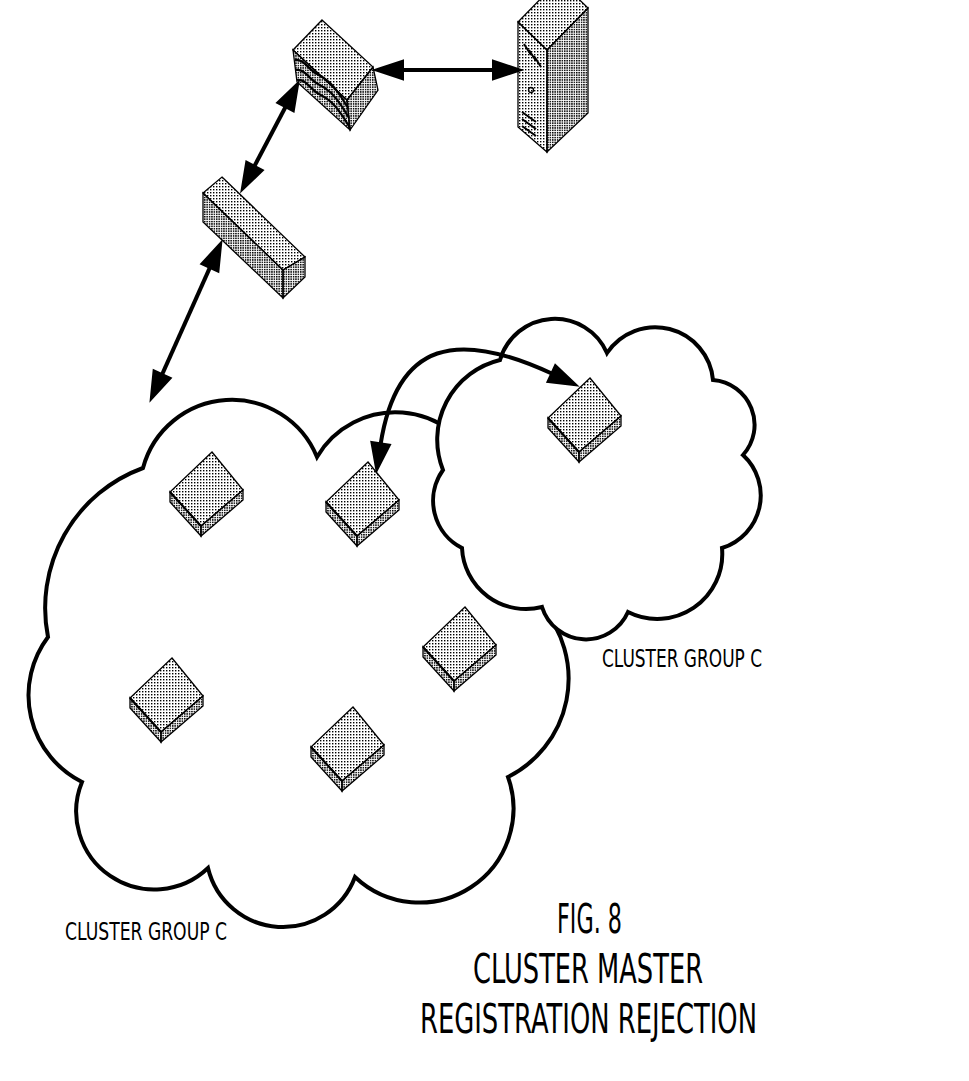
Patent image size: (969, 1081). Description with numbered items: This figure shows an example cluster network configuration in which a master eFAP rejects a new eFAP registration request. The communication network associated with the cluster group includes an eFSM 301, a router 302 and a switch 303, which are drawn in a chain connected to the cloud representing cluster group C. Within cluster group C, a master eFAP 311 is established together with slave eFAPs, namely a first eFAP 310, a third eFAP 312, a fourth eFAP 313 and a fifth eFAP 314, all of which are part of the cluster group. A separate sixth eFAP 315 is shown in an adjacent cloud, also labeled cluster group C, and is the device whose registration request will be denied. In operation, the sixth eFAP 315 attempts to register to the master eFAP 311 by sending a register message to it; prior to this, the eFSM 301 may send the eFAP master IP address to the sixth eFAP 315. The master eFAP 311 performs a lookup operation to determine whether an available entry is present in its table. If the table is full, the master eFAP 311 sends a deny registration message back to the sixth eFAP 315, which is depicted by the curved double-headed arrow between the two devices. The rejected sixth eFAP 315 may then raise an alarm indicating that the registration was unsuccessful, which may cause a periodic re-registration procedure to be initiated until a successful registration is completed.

The eFSM 301 is at (553, 95).
The router 302 is at (336, 94).
The switch 303 is at (254, 257).
The eFAP #1 310 is at (206, 532).
The master eFAP #2 311 is at (362, 541).
The eFAP #3 312 is at (459, 685).
The eFAP #4 313 is at (347, 786).
The eFAP #5 314 is at (166, 736).
The eFAP #6 315 is at (584, 457).